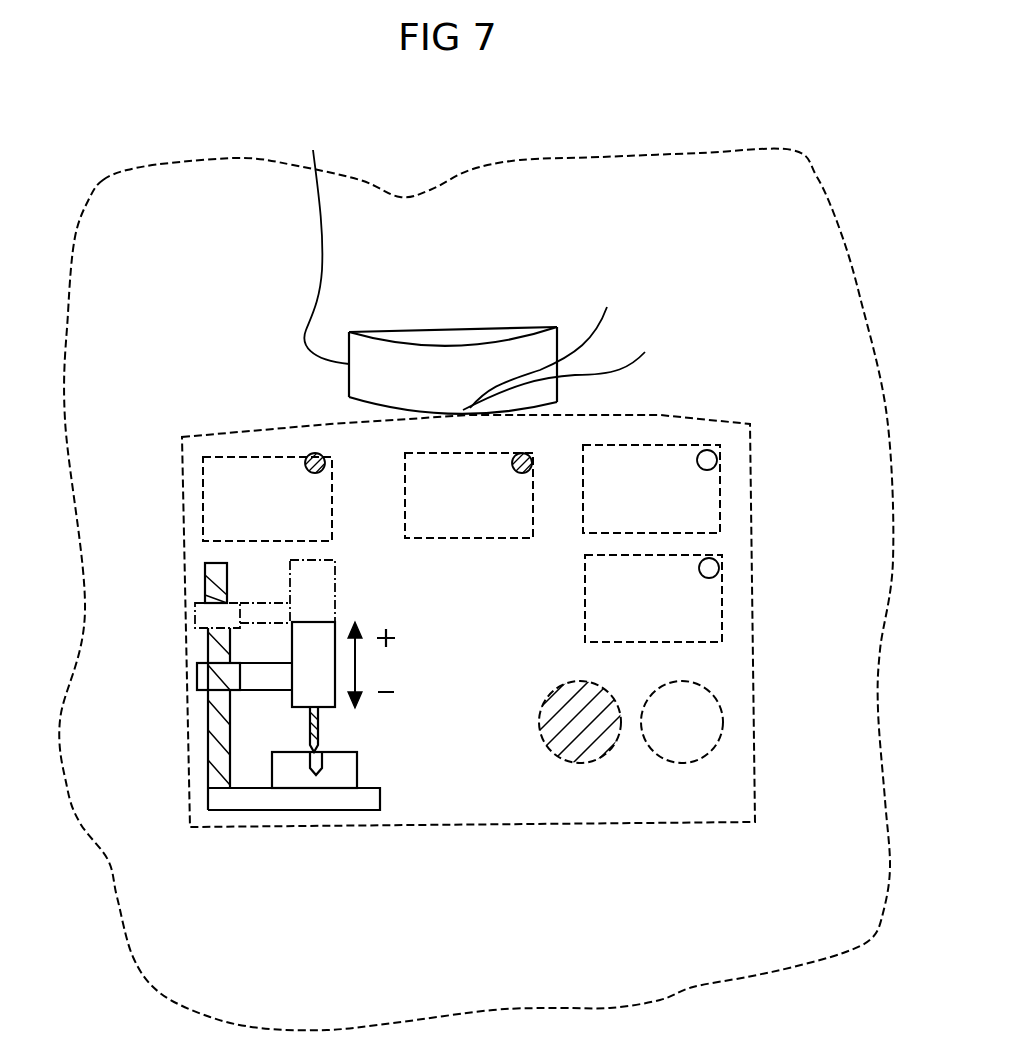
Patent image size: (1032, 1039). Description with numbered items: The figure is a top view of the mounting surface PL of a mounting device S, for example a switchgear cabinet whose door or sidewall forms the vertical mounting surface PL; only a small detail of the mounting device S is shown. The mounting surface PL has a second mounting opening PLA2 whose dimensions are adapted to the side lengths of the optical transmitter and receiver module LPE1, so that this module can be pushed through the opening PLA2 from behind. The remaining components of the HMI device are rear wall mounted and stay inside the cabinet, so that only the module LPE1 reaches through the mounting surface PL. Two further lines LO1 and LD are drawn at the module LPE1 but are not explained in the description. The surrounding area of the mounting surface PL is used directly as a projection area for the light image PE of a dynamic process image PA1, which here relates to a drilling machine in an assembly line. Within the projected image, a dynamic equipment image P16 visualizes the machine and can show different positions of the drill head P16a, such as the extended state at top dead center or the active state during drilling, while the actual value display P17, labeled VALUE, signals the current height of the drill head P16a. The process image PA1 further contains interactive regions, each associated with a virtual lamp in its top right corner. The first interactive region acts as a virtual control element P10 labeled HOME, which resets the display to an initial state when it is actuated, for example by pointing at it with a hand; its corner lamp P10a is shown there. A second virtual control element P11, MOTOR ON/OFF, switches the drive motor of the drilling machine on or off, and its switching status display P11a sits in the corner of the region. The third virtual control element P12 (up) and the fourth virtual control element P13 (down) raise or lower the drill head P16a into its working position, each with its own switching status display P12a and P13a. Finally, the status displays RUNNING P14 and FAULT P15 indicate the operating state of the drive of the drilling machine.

The mounting device S is at (716, 150).
The mounting surface PL is at (215, 198).
The second mounting opening PLA2 is at (313, 240).
The optical transmitter and receiver module LPE1 is at (453, 345).
The logic object LO1 is at (556, 342).
The logic device LD is at (566, 369).
The light image of the dynamic process image PE is at (668, 421).
The dynamic process image PA1 is at (785, 502).
The first virtual control element P10 is at (220, 480).
The home button indicator P10a is at (308, 470).
The second virtual control element P11 is at (410, 462).
The switching status display P11a is at (513, 462).
The third virtual control element P12 is at (718, 478).
The switching status display P12a is at (707, 470).
The fourth virtual control element P13 is at (718, 578).
The switching status display P13a is at (712, 578).
The first status display P14 is at (545, 738).
The second status display P15 is at (724, 721).
The dynamic equipment image P16 is at (212, 648).
The drill head P16a is at (310, 693).
The actual value display P17 is at (362, 700).